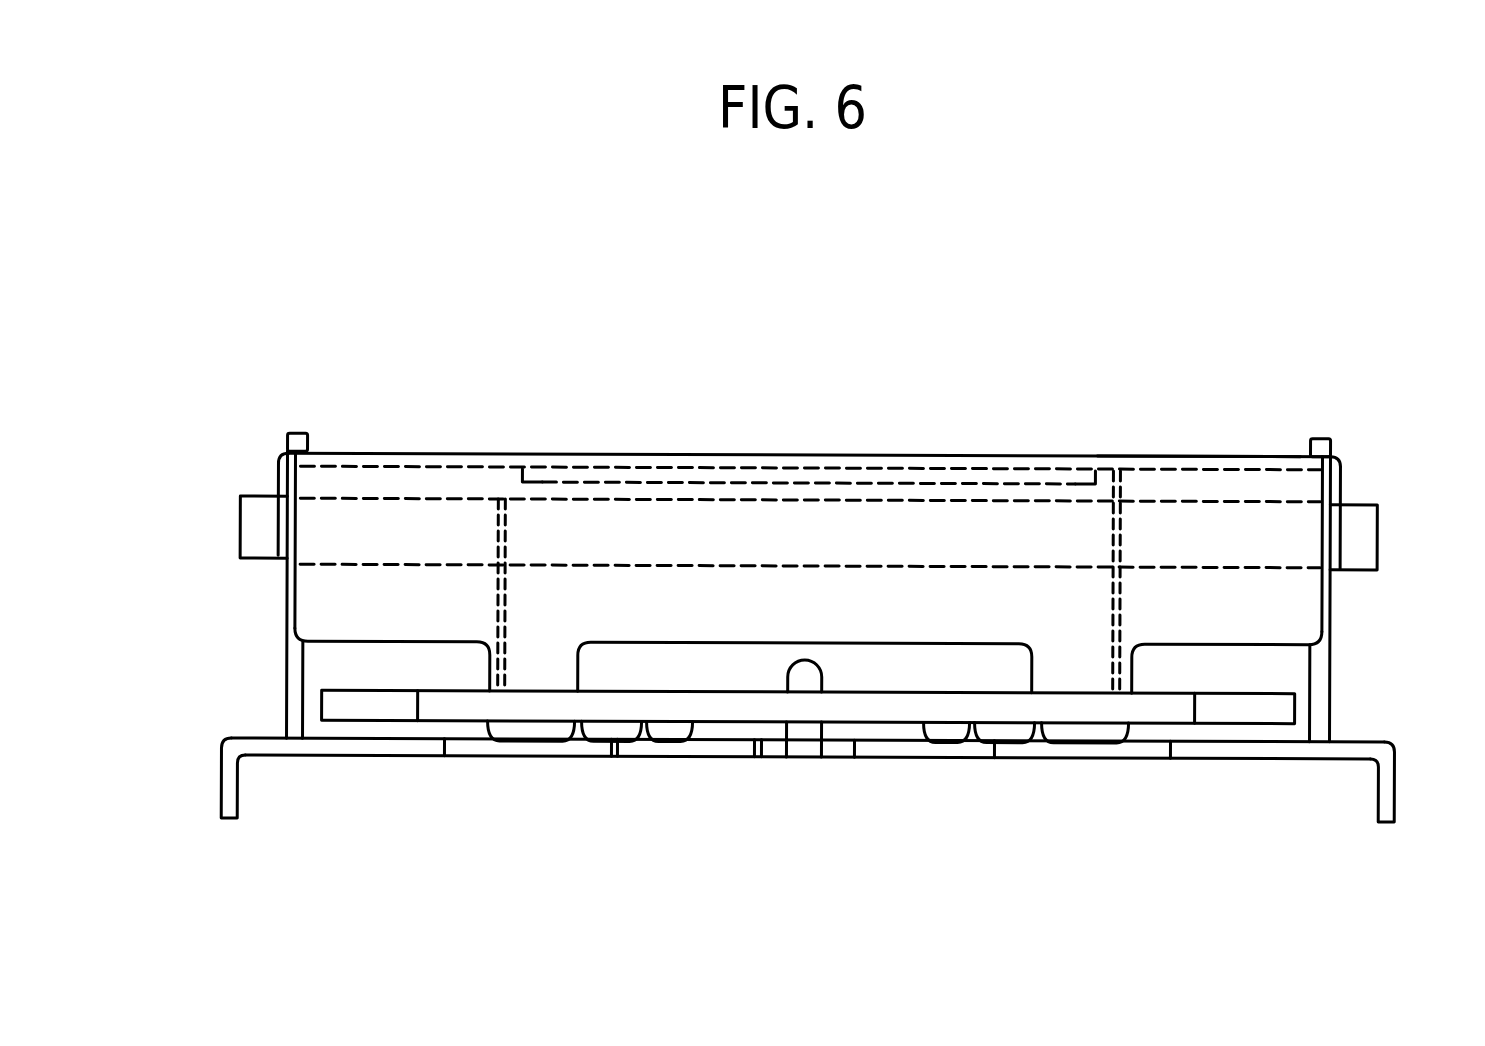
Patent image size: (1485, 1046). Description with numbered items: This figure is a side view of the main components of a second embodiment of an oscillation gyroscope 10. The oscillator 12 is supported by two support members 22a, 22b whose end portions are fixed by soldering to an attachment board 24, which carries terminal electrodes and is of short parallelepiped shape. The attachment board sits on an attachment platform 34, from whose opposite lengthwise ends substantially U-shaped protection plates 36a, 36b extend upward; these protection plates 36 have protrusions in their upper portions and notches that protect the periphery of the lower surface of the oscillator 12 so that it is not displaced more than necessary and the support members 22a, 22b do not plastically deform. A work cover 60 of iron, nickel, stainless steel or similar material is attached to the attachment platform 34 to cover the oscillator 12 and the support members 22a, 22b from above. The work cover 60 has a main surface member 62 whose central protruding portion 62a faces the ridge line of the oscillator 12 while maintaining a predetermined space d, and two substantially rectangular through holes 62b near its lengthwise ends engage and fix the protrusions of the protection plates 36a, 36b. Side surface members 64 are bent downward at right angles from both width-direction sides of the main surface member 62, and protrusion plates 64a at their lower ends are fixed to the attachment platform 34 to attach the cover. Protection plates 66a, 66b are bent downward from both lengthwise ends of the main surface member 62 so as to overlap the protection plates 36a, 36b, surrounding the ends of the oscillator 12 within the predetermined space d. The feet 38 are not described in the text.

The oscillation gyroscope 10 is at (1210, 292).
The oscillator 12 is at (757, 535).
The support member 22a is at (498, 500).
The support member 22b is at (1113, 470).
The attachment board 24 is at (730, 717).
The attachment platform 34 is at (418, 750).
The protection plate 36 is at (293, 435).
The protection plate 36a is at (289, 688).
The protection plate 36b is at (1320, 703).
The mounting leg 38 is at (232, 792).
The work cover 60 is at (857, 455).
The main surface member 62 is at (957, 455).
The protruding portion 62a is at (655, 466).
The through hole 62b is at (315, 443).
The side surface member 64 is at (902, 622).
The protrusion plate 64a is at (545, 678).
The protection plate 66a is at (277, 463).
The protection plate 66b is at (1342, 471).
The predetermined space d is at (938, 497).